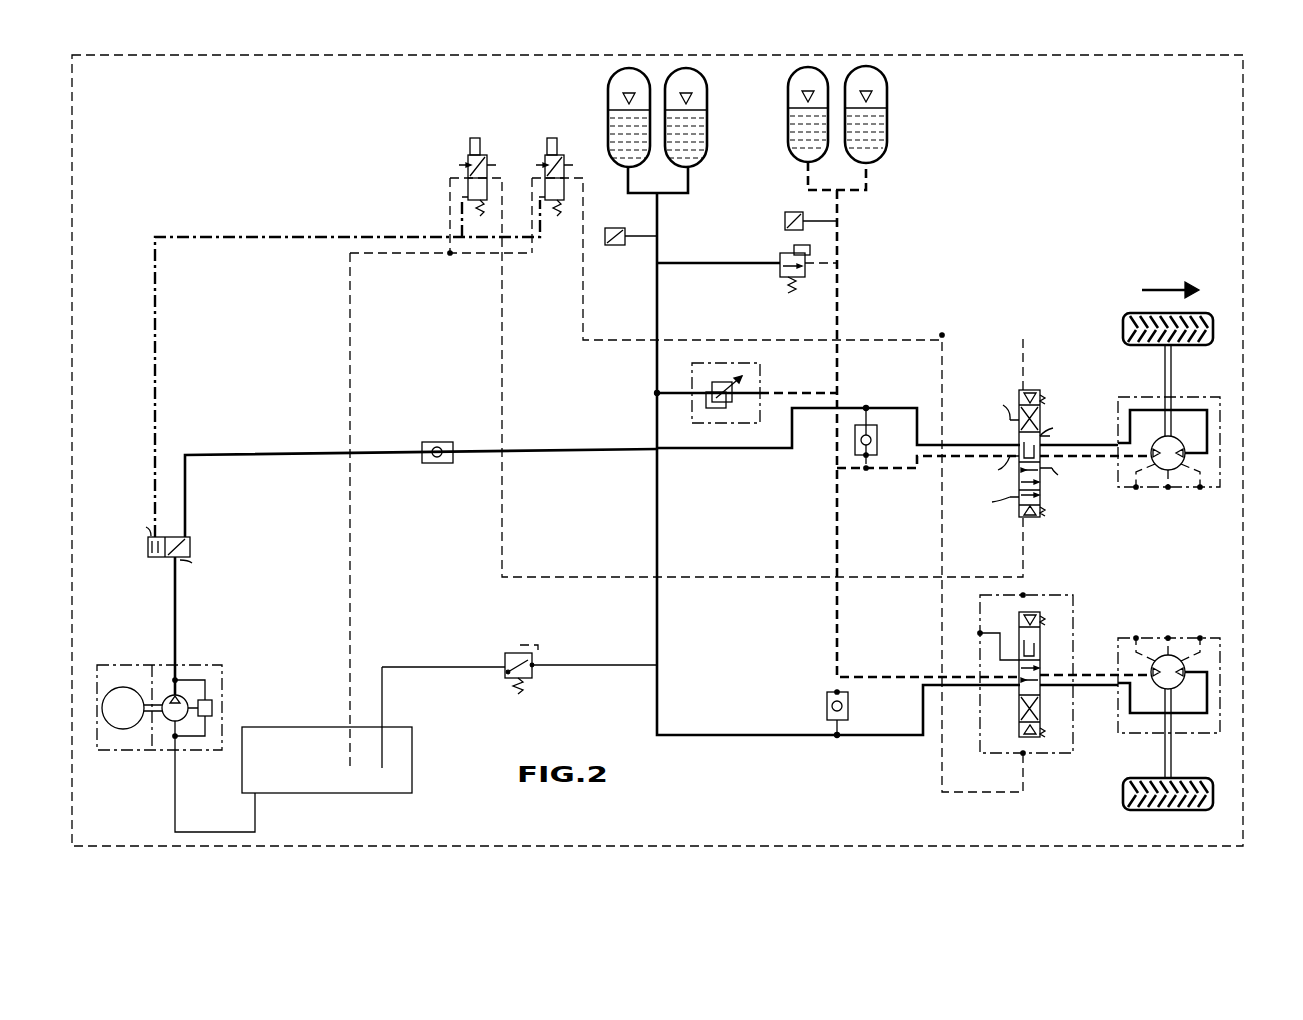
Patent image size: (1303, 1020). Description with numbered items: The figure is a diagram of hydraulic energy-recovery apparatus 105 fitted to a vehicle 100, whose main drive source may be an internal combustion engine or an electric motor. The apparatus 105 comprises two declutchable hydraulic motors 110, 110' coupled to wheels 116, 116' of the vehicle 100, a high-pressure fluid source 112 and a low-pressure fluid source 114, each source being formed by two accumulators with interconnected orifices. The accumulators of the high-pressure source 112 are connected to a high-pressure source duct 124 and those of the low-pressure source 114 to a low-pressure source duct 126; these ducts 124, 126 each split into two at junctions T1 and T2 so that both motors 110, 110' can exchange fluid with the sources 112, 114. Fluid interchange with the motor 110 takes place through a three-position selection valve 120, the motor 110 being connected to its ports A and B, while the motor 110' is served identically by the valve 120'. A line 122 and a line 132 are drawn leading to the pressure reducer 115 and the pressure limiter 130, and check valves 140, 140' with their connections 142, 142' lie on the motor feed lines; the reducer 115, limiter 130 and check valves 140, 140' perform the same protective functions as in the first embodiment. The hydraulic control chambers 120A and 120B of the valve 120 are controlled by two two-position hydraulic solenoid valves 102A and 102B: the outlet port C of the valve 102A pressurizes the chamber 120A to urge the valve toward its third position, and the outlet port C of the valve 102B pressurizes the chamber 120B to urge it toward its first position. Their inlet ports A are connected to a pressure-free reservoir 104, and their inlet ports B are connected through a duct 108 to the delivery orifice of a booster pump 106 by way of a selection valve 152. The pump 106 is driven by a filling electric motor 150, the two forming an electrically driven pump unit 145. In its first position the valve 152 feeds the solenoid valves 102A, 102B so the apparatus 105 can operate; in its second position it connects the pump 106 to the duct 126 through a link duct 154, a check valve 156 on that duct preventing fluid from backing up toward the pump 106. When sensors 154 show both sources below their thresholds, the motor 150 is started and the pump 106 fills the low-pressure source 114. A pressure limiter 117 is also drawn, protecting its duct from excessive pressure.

The vehicle 100 is at (1243, 108).
The hydraulic energy-recovery apparatus 105 is at (1037, 149).
The two-position hydraulic solenoid valve 102A is at (467, 156).
The two-position hydraulic solenoid valve 102B is at (547, 156).
The low-pressure fluid source 114 is at (591, 110).
The high-pressure fluid source 112 is at (897, 110).
The duct 108 is at (157, 340).
The link duct 154 is at (615, 245).
The high pressure line 122 is at (690, 262).
The pressure reducer 115 is at (780, 252).
The high-pressure source duct 124 is at (838, 288).
The pressure limiter 130 is at (716, 377).
The line 132 is at (670, 388).
The low-pressure source duct 126 is at (656, 430).
The junction T2 is at (659, 452).
The junction T1 is at (835, 470).
The check valve line 142 is at (872, 419).
The check valve 140 is at (882, 465).
The selection valve 120 is at (1052, 469).
The hydraulic control chamber 120A is at (1021, 515).
The hydraulic control chamber 120B is at (1029, 391).
The hydraulic motor 110 is at (1169, 457).
The wheel 116 is at (1174, 374).
The selection valve 120' is at (1049, 674).
The check valve 140' is at (809, 697).
The second check valve line 142' is at (871, 714).
The hydraulic motor 110' is at (1169, 668).
The wheel 116' is at (1175, 749).
The check valve 156 is at (438, 442).
The selection valve 152 is at (190, 542).
The booster pump 106 is at (172, 693).
The filling electric motor 150 is at (123, 730).
The electrically driven pump unit 145 is at (222, 680).
The pressure-free reservoir 104 is at (412, 757).
The pressure limiter 117 is at (505, 654).